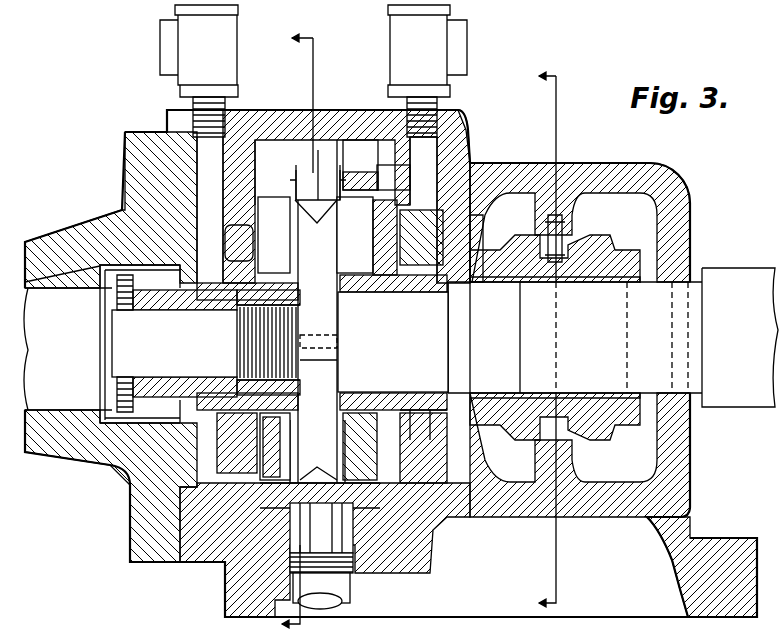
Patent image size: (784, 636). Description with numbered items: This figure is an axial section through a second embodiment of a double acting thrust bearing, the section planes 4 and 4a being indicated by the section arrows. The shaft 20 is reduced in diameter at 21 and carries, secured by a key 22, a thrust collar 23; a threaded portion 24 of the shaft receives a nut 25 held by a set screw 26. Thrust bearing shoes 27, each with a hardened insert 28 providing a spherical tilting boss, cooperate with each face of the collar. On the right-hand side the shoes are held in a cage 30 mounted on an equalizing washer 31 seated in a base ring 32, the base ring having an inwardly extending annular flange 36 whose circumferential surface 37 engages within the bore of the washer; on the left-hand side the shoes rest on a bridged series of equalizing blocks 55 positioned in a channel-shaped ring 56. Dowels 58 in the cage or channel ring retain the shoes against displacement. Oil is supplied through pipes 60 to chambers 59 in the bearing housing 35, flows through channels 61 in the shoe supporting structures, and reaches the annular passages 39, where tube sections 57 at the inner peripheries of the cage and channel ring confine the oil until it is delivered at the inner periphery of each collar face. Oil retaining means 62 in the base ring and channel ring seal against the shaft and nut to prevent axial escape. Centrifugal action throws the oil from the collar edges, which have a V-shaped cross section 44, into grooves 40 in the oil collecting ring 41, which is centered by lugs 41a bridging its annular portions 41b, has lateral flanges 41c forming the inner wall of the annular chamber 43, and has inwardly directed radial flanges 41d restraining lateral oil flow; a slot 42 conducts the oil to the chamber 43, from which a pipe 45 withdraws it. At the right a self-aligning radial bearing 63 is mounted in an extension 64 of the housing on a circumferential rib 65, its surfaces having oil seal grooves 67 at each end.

The section line 4- 4 is at (287, 331).
The section line 4a- 4a is at (530, 339).
The shaft 20 is at (700, 322).
The reduced diameter portion 21 is at (325, 372).
The key 22 is at (337, 340).
The thrust collar 23 is at (330, 400).
The threaded portion 24 is at (298, 300).
The nut 25 is at (175, 300).
The set screw 26 is at (112, 298).
The thrust bearing shoes 27 is at (393, 177).
The hardened insert 28 is at (270, 448).
The cage 30 is at (405, 500).
The leveling washer 31 is at (480, 190).
The base ring 32 is at (475, 160).
The bearing housing 35 is at (240, 112).
The annular flange 36 is at (440, 395).
The circumferential surface 37 is at (410, 410).
The annular passage 39 is at (237, 300).
The oil collecting grooves 40 is at (276, 530).
The oil collecting ring 41 is at (360, 165).
The centering lugs 41a is at (300, 170).
The annular portions 41b is at (256, 236).
The lateral flanges 41c is at (280, 140).
The radial flanges 41d is at (316, 461).
The slot 42 is at (312, 180).
The annular chamber 43 is at (350, 140).
The V-shaped cross section 44 is at (318, 228).
The pipe 45 is at (345, 598).
The equalizing blocks 55 is at (215, 452).
The channel-shaped ring 56 is at (222, 490).
The tube sections 57 is at (365, 285).
The dowels 58 is at (240, 490).
The chambers 59 is at (205, 162).
The pipes 60 is at (194, 62).
The channels 61 is at (185, 230).
The oil retaining means 62 is at (215, 295).
The radial bearing 63 is at (585, 258).
The extension 64 is at (692, 215).
The circumferential rib 65 is at (570, 214).
The oil seal grooves 67 is at (626, 282).